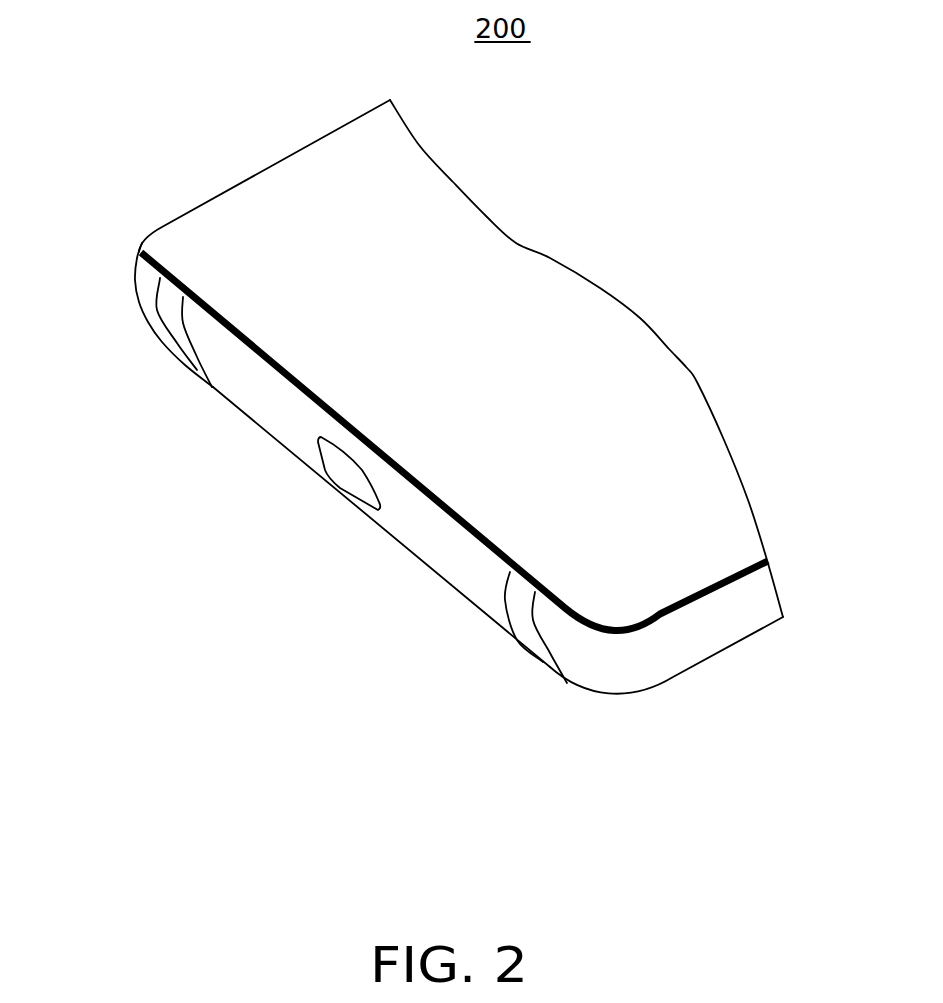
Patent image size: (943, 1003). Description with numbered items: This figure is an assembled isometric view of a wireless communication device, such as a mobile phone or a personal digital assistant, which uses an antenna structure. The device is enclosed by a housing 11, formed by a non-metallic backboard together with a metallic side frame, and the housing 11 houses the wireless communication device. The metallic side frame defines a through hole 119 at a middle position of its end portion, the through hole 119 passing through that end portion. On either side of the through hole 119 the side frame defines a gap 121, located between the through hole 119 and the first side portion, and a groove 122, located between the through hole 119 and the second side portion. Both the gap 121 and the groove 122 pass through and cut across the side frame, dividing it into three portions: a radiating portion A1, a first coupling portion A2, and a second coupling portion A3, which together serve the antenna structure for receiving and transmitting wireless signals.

The housing 11 is at (677, 437).
The through hole 119 is at (353, 475).
The gap 121 is at (523, 615).
The groove 122 is at (172, 320).
The radiating portion A1 is at (262, 390).
The first coupling portion A2 is at (650, 648).
The second coupling portion A3 is at (145, 285).